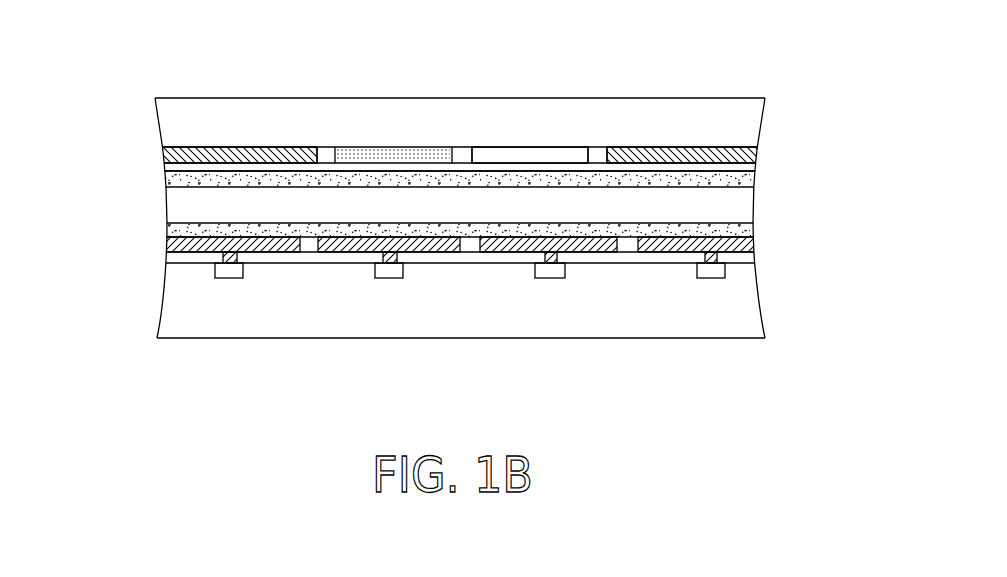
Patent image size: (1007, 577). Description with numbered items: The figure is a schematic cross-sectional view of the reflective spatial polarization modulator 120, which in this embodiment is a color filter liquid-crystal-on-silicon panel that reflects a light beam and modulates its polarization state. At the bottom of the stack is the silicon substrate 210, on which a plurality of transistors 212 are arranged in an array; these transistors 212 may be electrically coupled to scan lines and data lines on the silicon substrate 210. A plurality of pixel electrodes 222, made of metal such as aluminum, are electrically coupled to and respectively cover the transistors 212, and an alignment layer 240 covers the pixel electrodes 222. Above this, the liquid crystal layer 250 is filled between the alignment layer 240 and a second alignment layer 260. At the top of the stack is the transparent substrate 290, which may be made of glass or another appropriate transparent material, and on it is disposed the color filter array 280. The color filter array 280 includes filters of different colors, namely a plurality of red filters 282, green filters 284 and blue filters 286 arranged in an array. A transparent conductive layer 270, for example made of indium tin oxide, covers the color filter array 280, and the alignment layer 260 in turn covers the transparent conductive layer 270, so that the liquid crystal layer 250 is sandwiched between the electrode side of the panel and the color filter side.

The reflective spatial polarization modulator 120 is at (451, 241).
The silicon substrate 210 is at (733, 317).
The transistors 212 is at (228, 278).
The pixel electrodes 222 is at (755, 248).
The alignment layer 240 is at (753, 232).
The liquid crystal layer 250 is at (740, 208).
The alignment layer 260 is at (757, 182).
The transparent conductive layer 270 is at (745, 168).
The color filter array 280 is at (147, 152).
The red filters 282 is at (259, 150).
The green filters 284 is at (403, 150).
The blue filters 286 is at (541, 150).
The transparent substrate 290 is at (745, 123).